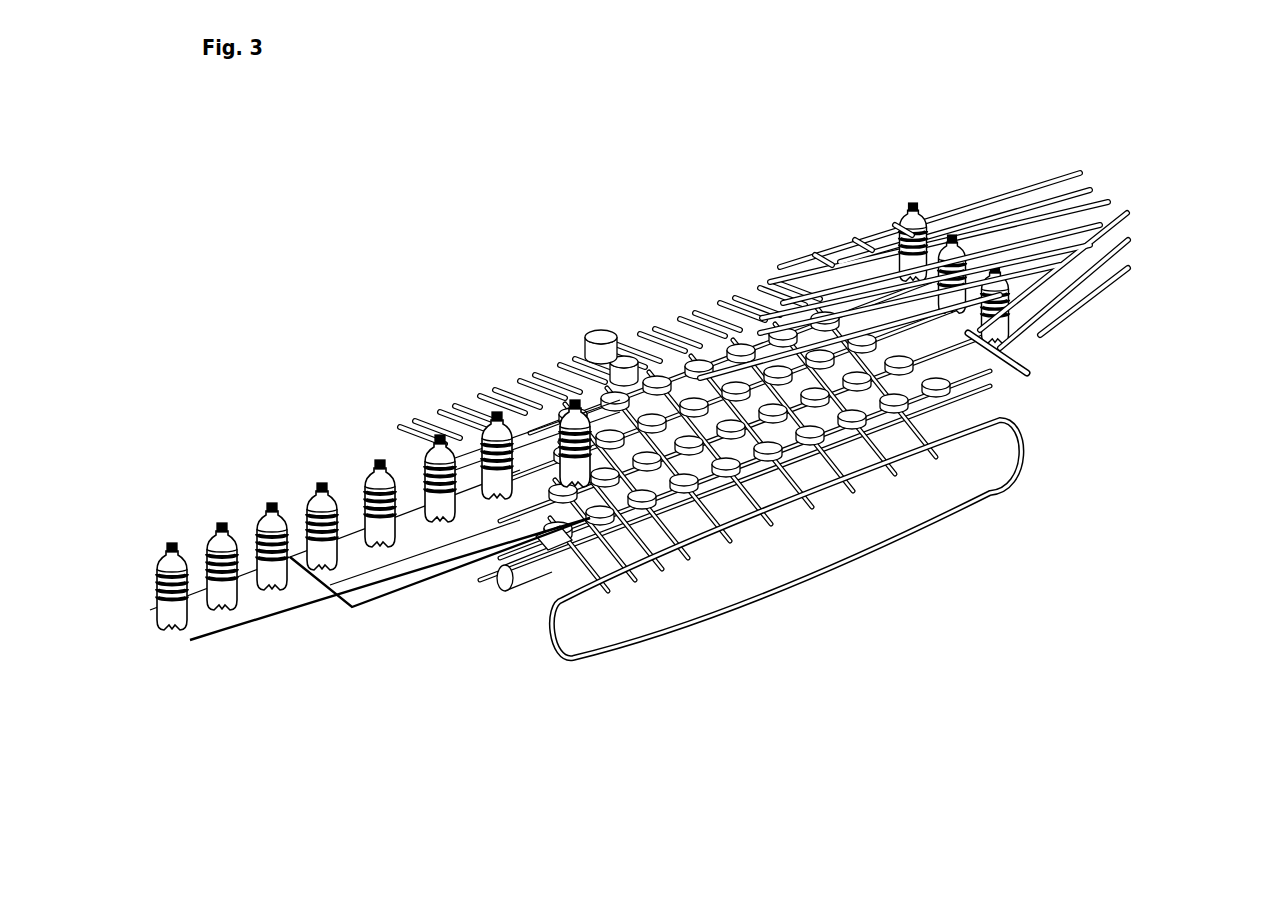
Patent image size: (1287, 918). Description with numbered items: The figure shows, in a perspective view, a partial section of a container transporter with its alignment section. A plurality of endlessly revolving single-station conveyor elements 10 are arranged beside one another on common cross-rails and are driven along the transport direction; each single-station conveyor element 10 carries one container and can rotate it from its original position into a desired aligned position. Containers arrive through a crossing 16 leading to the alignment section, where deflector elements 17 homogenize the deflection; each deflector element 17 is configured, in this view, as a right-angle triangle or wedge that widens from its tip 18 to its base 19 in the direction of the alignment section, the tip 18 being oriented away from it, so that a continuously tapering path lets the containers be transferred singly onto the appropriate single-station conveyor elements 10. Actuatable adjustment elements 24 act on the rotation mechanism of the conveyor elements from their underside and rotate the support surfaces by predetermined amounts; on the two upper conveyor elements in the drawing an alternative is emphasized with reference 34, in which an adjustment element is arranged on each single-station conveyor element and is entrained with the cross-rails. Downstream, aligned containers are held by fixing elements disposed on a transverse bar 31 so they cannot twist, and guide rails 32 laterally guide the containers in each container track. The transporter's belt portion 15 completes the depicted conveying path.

The single-station conveyor element 10 is at (857, 483).
The conveyor belt 15 is at (968, 503).
The crossing 16 is at (520, 508).
The deflector element 17 is at (603, 505).
The tip 18 is at (445, 442).
The base 19 is at (527, 427).
The adjustment element 24 is at (735, 510).
The transverse bar 31 is at (1027, 373).
The guide rail 32 is at (1093, 293).
The adjustment element arranged on each single-station conveyor element 34 is at (604, 340).